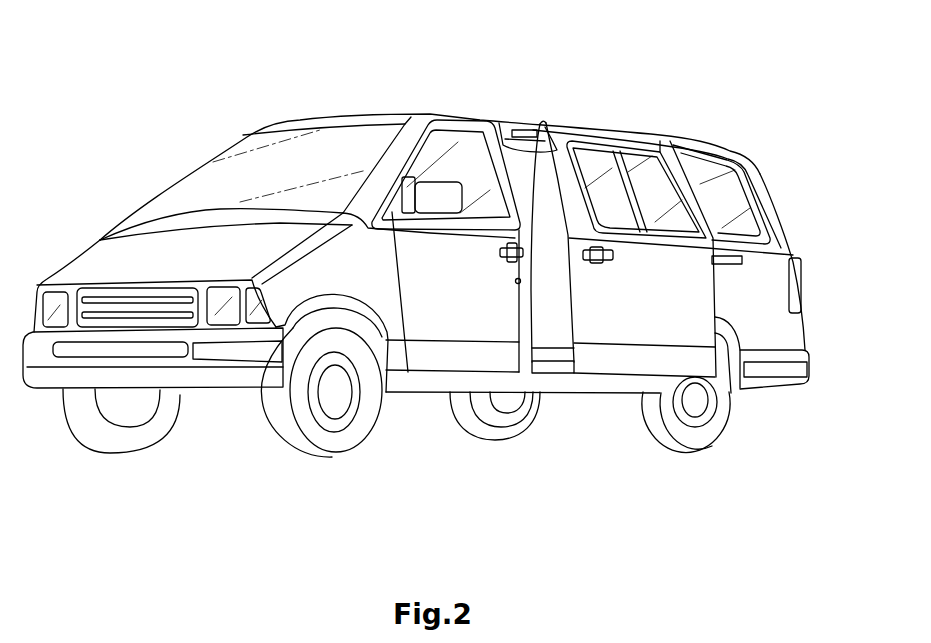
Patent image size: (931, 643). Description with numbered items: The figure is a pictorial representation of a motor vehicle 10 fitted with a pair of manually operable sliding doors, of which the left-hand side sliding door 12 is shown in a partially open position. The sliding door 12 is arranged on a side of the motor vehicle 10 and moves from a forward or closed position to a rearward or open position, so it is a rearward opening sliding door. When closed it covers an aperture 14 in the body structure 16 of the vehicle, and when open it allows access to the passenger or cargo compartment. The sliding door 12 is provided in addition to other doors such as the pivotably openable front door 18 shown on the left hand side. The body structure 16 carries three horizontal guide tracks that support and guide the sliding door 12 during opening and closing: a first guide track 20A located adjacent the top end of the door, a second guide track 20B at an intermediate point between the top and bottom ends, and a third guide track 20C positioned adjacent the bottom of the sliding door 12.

The motor vehicle 10 is at (182, 107).
The sliding door 12 is at (631, 363).
The aperture 14 is at (550, 290).
The body structure 16 is at (384, 116).
The front door 18 is at (463, 360).
The first guide track 20A is at (552, 149).
The second guide track 20B is at (730, 264).
The third guide track 20C is at (547, 360).